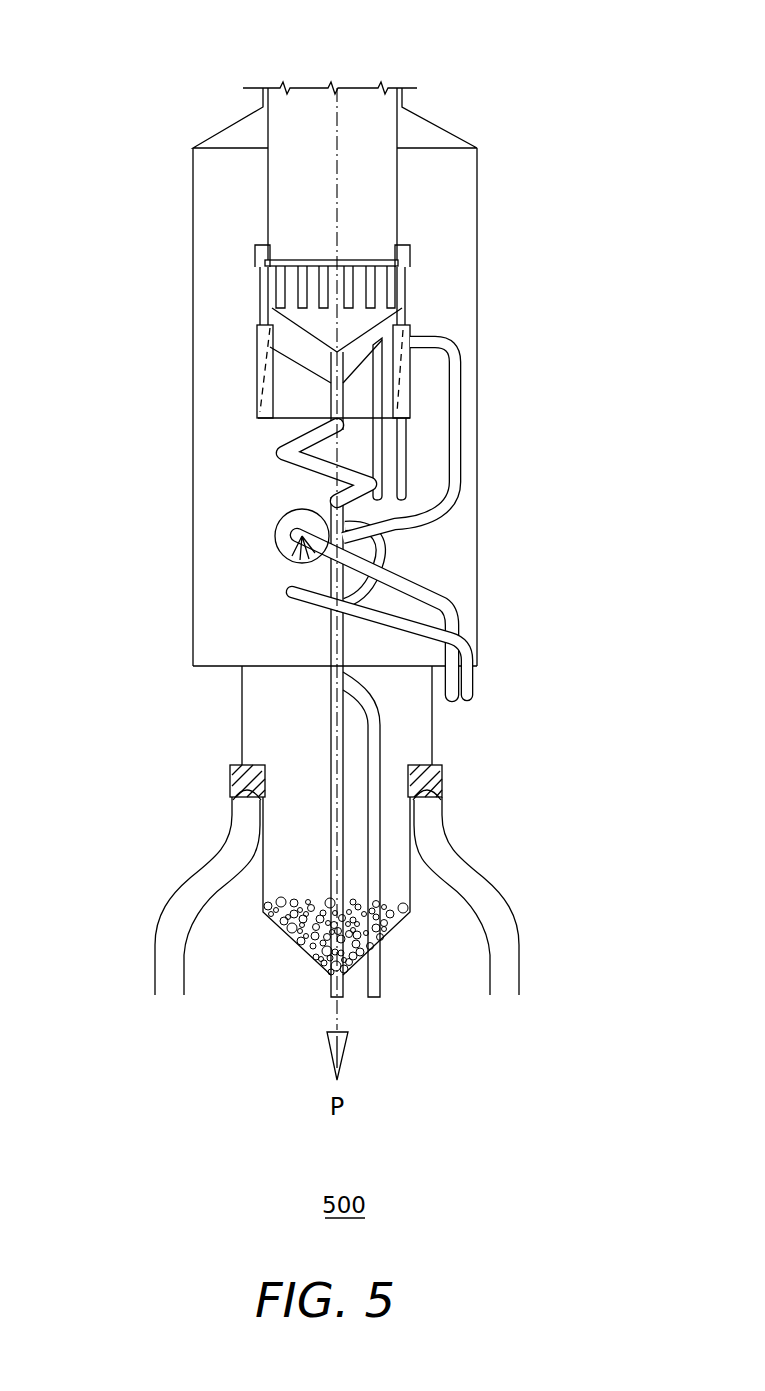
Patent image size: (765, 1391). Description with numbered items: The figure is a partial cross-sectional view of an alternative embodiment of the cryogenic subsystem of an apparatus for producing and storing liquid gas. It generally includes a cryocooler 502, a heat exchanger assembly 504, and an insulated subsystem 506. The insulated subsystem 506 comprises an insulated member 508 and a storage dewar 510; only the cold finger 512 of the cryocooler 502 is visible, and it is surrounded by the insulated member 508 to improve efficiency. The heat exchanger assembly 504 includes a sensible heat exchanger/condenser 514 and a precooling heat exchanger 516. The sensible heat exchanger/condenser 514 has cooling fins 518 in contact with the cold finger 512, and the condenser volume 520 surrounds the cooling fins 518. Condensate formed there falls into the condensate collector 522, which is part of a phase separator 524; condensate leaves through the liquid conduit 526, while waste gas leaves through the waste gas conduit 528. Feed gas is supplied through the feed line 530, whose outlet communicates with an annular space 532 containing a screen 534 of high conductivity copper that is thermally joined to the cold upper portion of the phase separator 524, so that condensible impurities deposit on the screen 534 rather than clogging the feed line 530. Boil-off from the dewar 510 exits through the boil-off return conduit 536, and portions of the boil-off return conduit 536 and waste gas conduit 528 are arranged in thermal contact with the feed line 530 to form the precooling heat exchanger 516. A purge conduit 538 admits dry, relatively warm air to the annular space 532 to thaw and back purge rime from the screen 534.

The cryocooler 502 is at (322, 88).
The heat exchanger assembly 504 is at (256, 288).
The insulated subsystem 506 is at (160, 578).
The insulated member 508 is at (457, 175).
The storage dewar 510 is at (160, 963).
The cold finger 512 is at (388, 138).
The sensible heat exchanger/condenser 514 is at (402, 308).
The precooling heat exchanger 516 is at (287, 558).
The cooling fins 518 is at (300, 287).
The condenser volume 520 is at (357, 323).
The condensate collector 522 is at (262, 352).
The phase separator 524 is at (307, 358).
The liquid conduit 526 is at (283, 456).
The waste gas conduit 528 is at (383, 383).
The feed line 530 is at (405, 462).
The annular space 532 is at (405, 417).
The screen 534 is at (262, 382).
The boil-off return conduit 536 is at (378, 990).
The purge conduit 538 is at (443, 510).